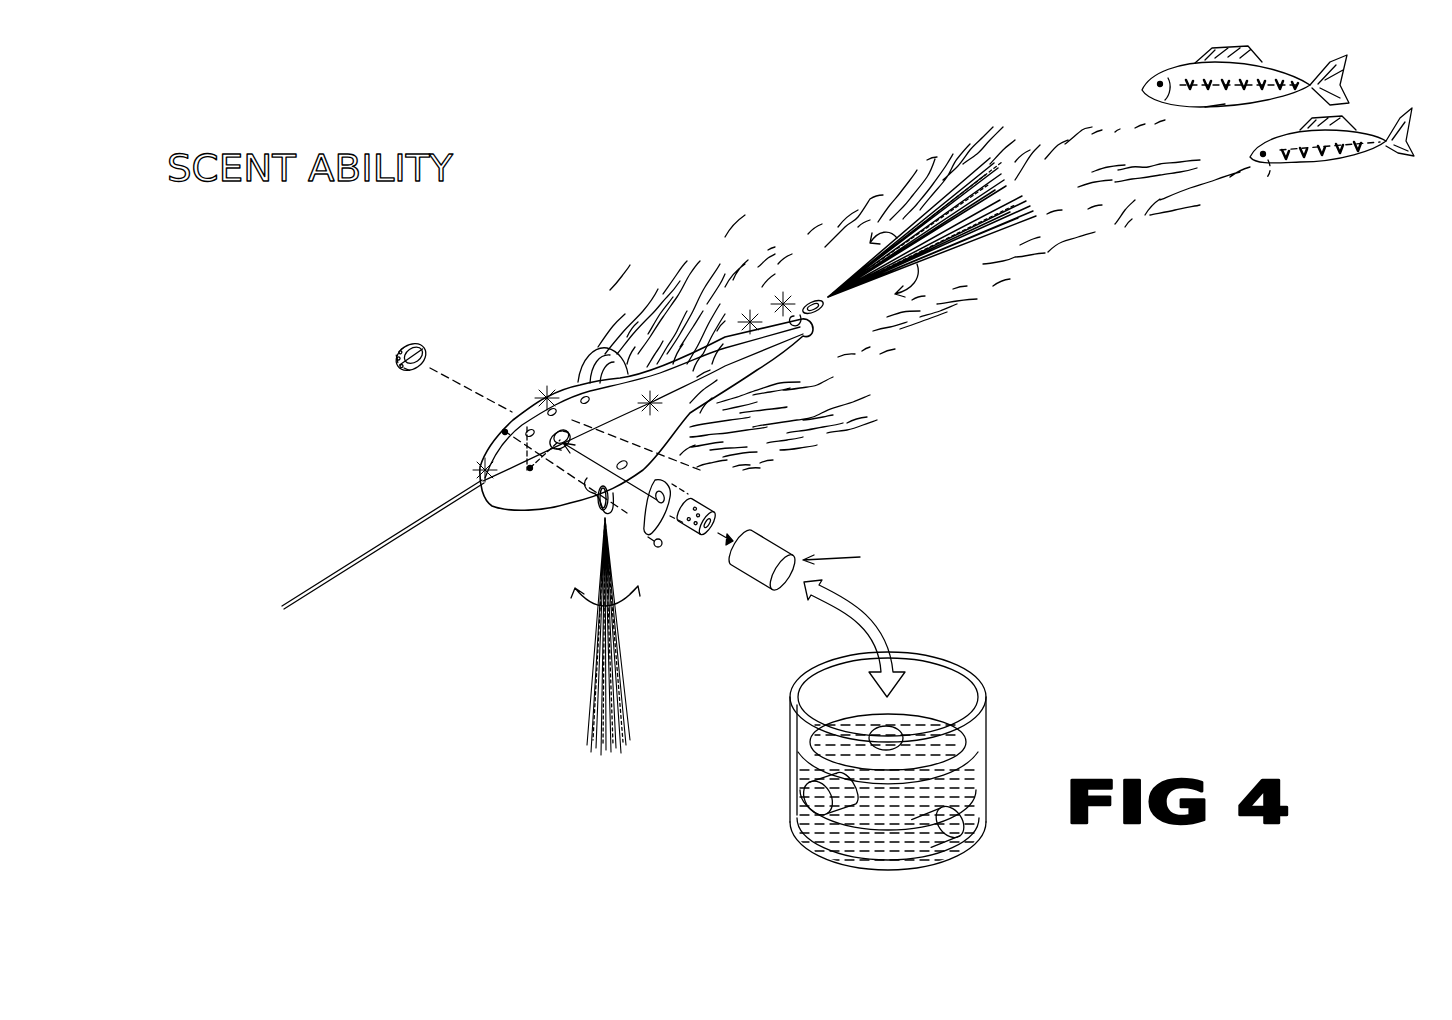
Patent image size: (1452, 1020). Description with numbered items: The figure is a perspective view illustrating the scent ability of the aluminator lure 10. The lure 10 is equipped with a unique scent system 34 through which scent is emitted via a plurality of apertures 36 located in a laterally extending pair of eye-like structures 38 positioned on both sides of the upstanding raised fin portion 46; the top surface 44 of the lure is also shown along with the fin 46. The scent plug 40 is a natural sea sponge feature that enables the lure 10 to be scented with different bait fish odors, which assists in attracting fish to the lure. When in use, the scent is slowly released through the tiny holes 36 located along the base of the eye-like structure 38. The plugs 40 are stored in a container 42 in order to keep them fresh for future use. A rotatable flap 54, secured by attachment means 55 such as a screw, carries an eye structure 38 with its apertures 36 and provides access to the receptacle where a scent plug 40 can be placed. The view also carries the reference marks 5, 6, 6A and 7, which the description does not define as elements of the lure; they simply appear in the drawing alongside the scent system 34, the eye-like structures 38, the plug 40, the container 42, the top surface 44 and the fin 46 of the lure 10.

The scent trail 5 is at (592, 246).
The scent 6 is at (855, 454).
The eyelet ring 6A is at (490, 327).
The fishing lure 7 is at (482, 555).
The aluminator lure 10 is at (530, 517).
The scent system 34 is at (747, 514).
The apertures 36 is at (705, 497).
The eye-like structures 38 is at (707, 537).
The scent plug 40 is at (830, 590).
The container 42 is at (983, 683).
The top surface 44 is at (762, 354).
The raised fin portion 46 is at (623, 378).
The rotatable flap 54 is at (652, 537).
The attachment means 55 is at (663, 548).